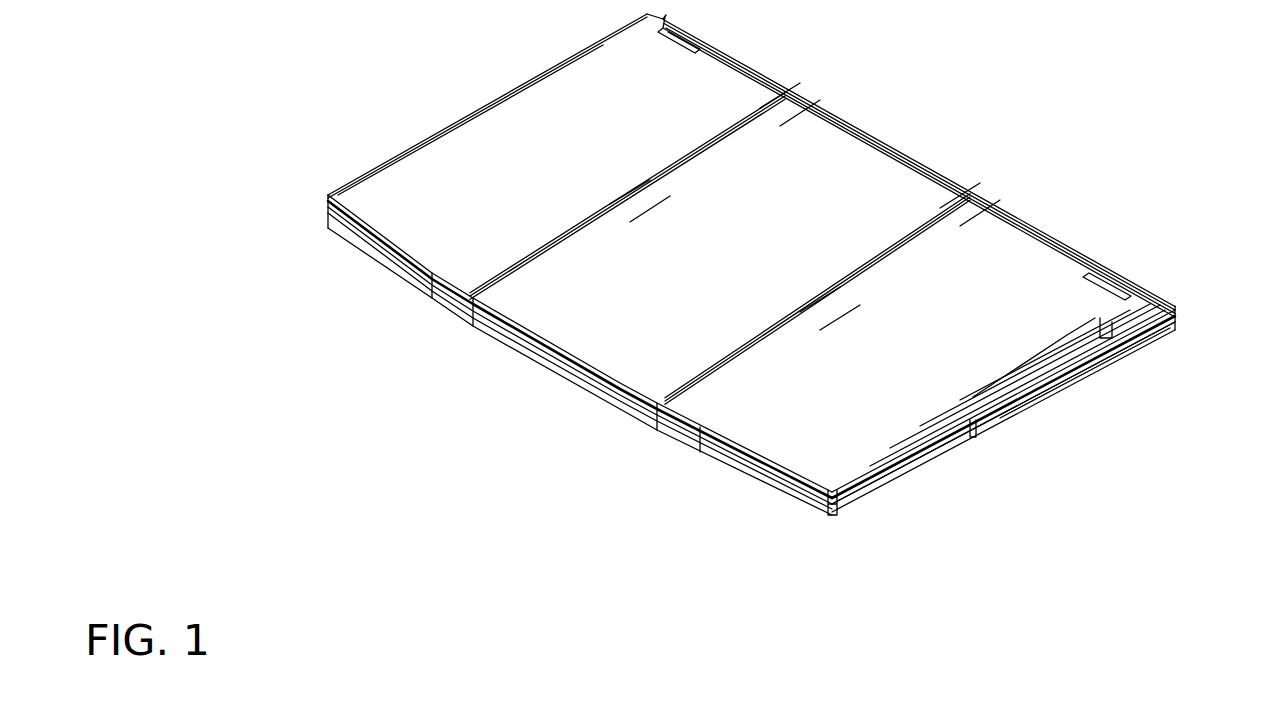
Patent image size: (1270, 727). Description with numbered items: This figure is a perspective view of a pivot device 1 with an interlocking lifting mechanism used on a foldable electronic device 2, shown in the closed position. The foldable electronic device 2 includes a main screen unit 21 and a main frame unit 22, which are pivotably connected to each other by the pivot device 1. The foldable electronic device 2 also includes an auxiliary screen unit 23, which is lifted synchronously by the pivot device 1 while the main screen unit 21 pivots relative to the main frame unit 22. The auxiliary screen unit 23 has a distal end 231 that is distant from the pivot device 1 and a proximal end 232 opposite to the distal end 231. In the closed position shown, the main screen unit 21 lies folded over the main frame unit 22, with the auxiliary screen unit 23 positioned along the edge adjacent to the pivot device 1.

The pivot device 1 is at (1157, 293).
The foldable electronic device 2 is at (908, 216).
The main screen unit 21 is at (1087, 347).
The main frame unit 22 is at (1163, 333).
The auxiliary screen unit 23 is at (1043, 382).
The distal end 231 is at (973, 436).
The proximal end 232 is at (1108, 336).